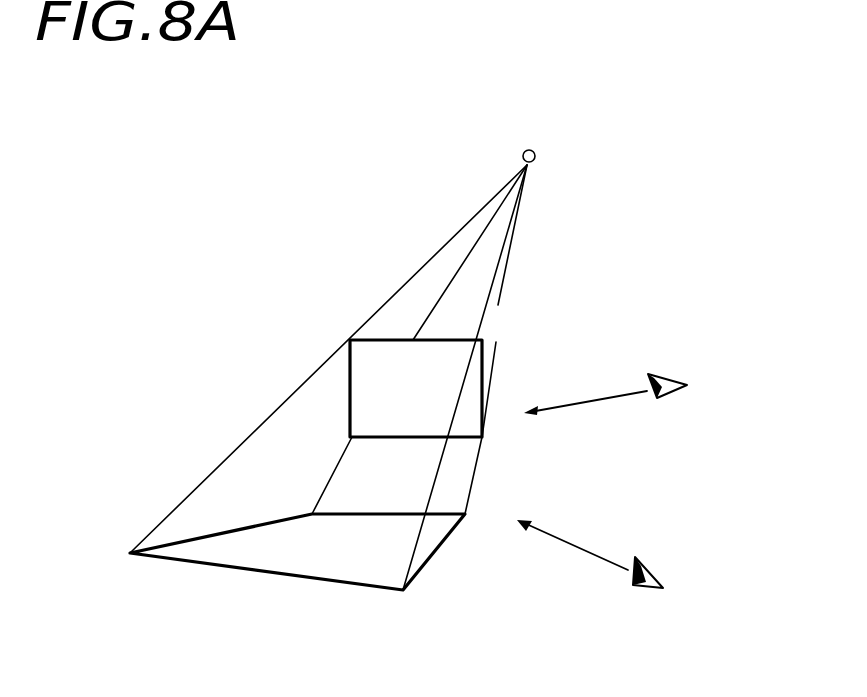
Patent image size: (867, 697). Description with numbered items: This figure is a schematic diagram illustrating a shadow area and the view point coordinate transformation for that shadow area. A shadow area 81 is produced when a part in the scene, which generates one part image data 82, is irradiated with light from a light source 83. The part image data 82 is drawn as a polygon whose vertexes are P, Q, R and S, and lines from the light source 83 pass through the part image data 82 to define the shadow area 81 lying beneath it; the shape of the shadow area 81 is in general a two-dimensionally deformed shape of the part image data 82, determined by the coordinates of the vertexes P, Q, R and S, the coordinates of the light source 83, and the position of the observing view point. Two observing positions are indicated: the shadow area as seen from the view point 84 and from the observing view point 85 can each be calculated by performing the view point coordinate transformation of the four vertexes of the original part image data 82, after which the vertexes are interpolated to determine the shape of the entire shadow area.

The shadow area 81 is at (365, 555).
The part image data 82 is at (362, 373).
The light source 83 is at (370, 353).
The view point 84 is at (613, 570).
The observing view point 85 is at (629, 388).